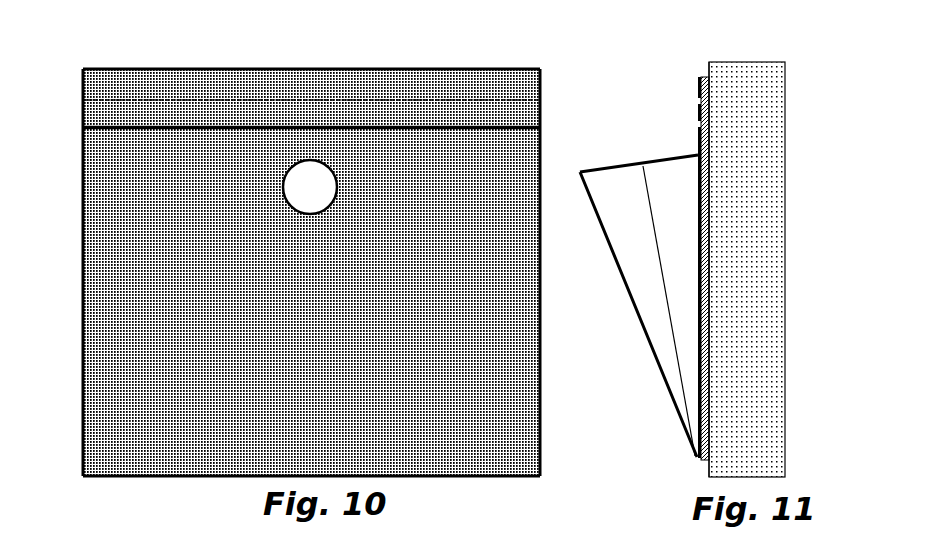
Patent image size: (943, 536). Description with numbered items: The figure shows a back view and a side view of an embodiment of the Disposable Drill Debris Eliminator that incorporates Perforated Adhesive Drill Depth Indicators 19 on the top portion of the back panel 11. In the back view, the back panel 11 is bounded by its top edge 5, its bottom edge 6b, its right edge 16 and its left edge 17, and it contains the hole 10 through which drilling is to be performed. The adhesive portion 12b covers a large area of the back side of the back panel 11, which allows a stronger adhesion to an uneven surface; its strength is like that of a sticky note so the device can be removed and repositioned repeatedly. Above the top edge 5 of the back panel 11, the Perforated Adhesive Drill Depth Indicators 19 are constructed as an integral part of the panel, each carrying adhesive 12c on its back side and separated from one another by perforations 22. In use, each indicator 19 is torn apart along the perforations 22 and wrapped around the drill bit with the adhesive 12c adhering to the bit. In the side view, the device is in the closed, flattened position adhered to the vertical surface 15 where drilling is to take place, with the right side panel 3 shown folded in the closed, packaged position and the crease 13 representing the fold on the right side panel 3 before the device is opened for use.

In FIG. 11, the right side panel 3 is at (630, 224).
In FIG. 10, the top edge of the back panel 5 is at (115, 122).
In FIG. 10, the bottom edge of the back panel 6b is at (192, 478).
In FIG. 10, the hole of the back panel 10 is at (305, 186).
In FIG. 10, the back panel 11 is at (140, 328).
In FIG. 10, the adhesive portion/area 12b is at (428, 193).
In FIG. 11, the adhesive portion/area 12b is at (706, 290).
In FIG. 10, the adhesives 12c is at (521, 110).
In FIG. 11, the adhesives 12c is at (709, 115).
In FIG. 11, the crease 13 is at (667, 306).
In FIG. 11, the vertical surface 15 is at (766, 158).
In FIG. 10, the right edge of the back panel 16 is at (80, 282).
In FIG. 10, the left edge of the back panel 17 is at (541, 405).
In FIG. 10, the Perforated Adhesive Drill Depth Indicators 19 is at (240, 115).
In FIG. 11, the Perforated Adhesive Drill Depth Indicators 19 is at (697, 116).
In FIG. 10, the perforations 22 is at (438, 95).